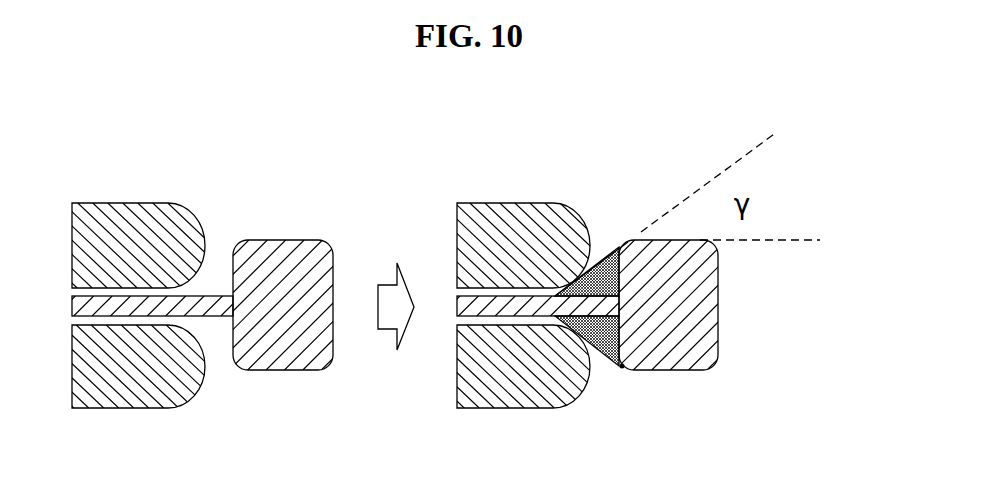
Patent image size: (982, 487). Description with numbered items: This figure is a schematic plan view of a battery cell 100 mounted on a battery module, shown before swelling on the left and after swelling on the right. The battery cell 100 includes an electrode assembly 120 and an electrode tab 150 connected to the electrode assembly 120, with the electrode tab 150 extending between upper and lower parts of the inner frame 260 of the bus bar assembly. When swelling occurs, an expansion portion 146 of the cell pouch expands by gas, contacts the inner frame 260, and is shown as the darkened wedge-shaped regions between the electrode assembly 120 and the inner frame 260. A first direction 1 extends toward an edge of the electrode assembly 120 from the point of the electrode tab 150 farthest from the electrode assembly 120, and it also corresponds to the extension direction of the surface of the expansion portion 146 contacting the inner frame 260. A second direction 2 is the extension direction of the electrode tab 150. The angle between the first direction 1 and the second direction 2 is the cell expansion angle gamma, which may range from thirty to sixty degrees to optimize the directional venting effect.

The battery cell 100 is at (457, 294).
The electrode assembly 120 is at (283, 337).
The electrode tab 150 is at (207, 305).
The expansion portion 146 is at (622, 366).
The inner frame 260 is at (113, 203).
The first direction 1 is at (678, 202).
The second direction 2 is at (773, 240).